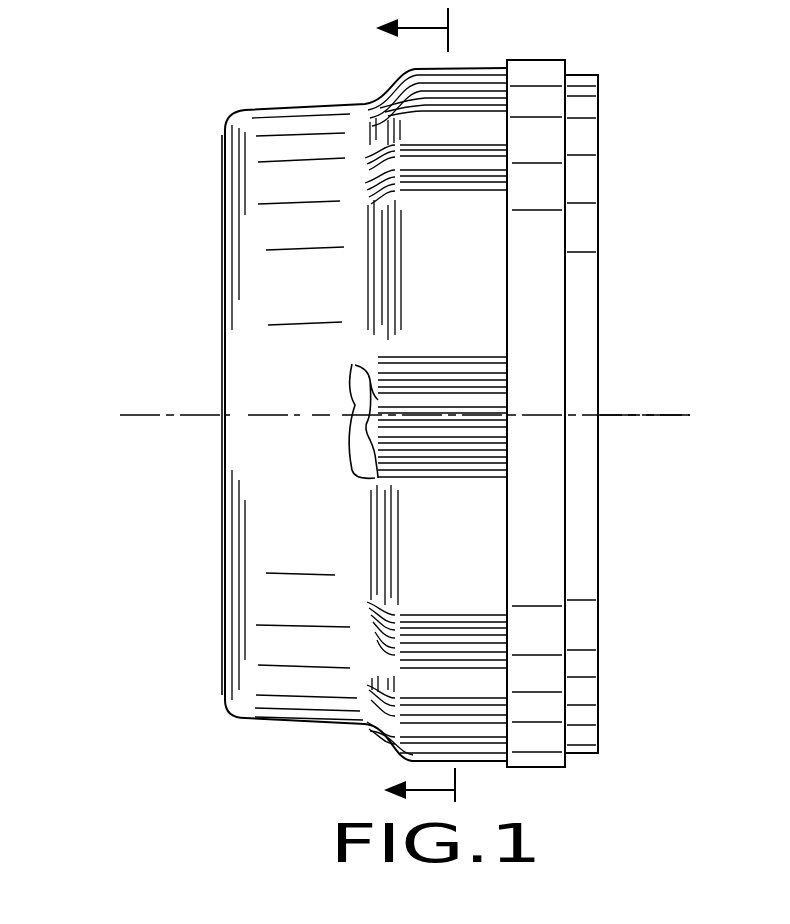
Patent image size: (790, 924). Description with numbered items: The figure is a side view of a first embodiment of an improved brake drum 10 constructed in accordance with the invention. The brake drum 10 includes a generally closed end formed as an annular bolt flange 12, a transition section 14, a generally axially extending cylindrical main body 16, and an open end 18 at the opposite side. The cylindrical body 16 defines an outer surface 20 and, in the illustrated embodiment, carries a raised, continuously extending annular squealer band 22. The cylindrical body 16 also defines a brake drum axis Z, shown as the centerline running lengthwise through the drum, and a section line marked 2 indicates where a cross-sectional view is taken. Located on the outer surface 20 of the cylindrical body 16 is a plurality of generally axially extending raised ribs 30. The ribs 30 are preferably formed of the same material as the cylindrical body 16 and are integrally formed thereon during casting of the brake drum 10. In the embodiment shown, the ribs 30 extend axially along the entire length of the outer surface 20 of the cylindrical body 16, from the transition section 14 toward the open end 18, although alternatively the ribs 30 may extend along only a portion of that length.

The brake drum 10 is at (158, 225).
The annular bolt flange 12 is at (223, 494).
The transition section 14 is at (272, 728).
The cylindrical main body 16 is at (394, 763).
The open end 18 is at (603, 518).
The outer surface 20 is at (482, 763).
The squealer band 22 is at (562, 765).
The raised ribs 30 is at (460, 153).
The section line 2- 2 is at (388, 409).
The brake drum axis Z is at (632, 415).